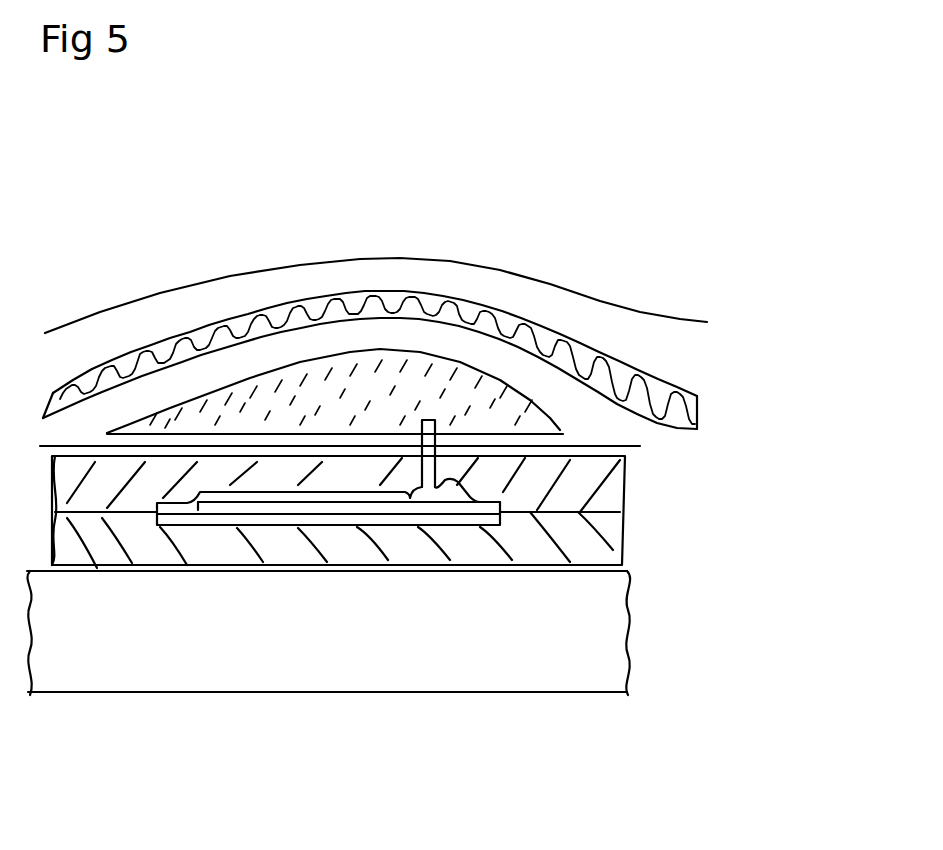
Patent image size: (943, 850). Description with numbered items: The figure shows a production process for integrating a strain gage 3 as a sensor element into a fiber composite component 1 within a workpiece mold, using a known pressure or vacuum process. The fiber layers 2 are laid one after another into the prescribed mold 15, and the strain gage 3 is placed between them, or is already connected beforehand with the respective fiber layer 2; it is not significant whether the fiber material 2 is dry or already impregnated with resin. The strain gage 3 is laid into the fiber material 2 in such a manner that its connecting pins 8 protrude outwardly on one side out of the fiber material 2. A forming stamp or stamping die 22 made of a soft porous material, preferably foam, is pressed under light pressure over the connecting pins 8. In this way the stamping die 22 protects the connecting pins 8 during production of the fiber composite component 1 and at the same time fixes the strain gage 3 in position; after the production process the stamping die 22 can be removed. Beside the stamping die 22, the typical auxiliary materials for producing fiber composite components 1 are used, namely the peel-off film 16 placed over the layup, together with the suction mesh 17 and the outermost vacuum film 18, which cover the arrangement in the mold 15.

The fiber composite component 1 is at (85, 492).
The fiber layer 2 is at (588, 542).
The strain gage 3 is at (160, 527).
The connecting pins 8 is at (430, 420).
The mold 15 is at (602, 643).
The peel-off film 16 is at (640, 446).
The suction mesh 17 is at (678, 410).
The vacuum film 18 is at (668, 317).
The stamping die 22 is at (380, 383).